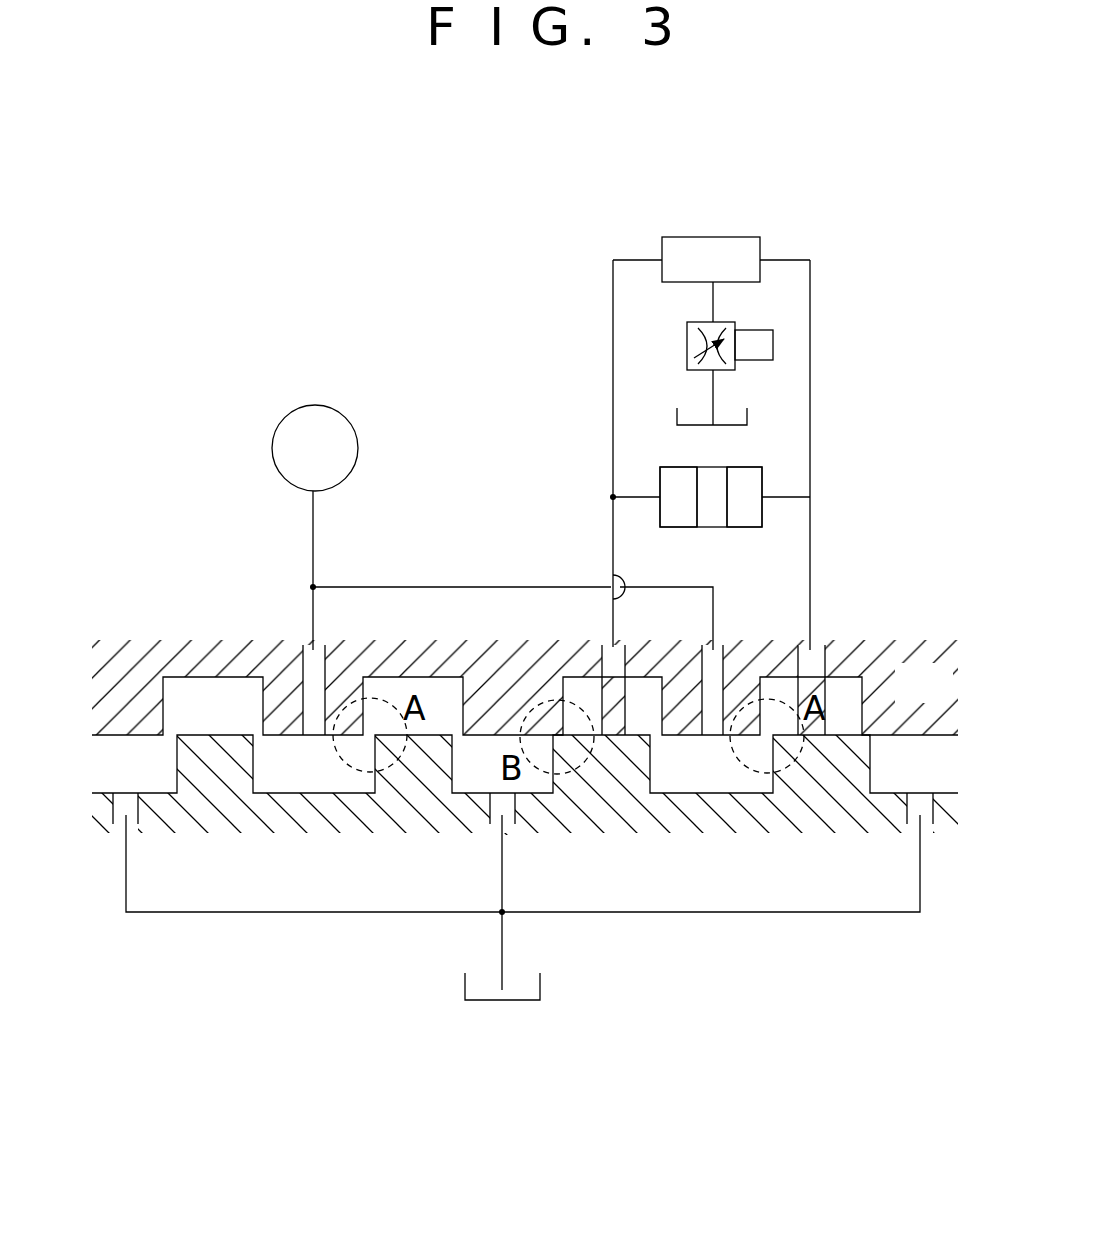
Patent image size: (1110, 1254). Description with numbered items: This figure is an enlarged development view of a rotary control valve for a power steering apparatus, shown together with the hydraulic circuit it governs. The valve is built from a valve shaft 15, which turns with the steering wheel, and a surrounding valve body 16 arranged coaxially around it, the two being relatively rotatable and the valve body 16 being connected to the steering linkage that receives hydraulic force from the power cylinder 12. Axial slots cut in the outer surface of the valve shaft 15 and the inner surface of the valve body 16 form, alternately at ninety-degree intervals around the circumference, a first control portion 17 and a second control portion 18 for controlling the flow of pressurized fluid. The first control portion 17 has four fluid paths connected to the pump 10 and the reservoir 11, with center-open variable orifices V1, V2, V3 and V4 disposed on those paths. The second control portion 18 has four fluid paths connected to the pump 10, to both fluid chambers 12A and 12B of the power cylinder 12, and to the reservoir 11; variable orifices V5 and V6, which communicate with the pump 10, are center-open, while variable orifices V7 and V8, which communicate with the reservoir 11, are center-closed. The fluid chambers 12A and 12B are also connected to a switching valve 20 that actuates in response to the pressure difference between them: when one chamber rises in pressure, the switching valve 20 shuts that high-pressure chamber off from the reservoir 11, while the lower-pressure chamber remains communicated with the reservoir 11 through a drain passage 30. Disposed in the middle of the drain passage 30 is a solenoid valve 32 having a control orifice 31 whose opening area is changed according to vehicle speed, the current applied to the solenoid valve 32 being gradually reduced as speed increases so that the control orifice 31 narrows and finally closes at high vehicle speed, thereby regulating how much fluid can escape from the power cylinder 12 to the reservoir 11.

The pump 10 is at (320, 420).
The reservoir 11 is at (515, 1000).
The power cylinder 12 is at (672, 467).
The fluid chamber 12A is at (672, 514).
The fluid chamber 12B is at (752, 515).
The valve shaft 15 is at (877, 875).
The valve body 16 is at (950, 698).
The first control portion 17 is at (218, 822).
The second control portion 18 is at (628, 824).
The switching valve 20 is at (727, 250).
The drain passage 30 is at (713, 308).
The control orifice 31 is at (687, 347).
The solenoid valve 32 is at (773, 343).
The variable orifice V1 is at (266, 748).
The variable orifice V2 is at (358, 748).
The variable orifice V3 is at (178, 728).
The variable orifice V4 is at (452, 728).
The variable orifice V5 is at (662, 748).
The variable orifice V6 is at (758, 748).
The variable orifice V7 is at (578, 728).
The variable orifice V8 is at (848, 728).